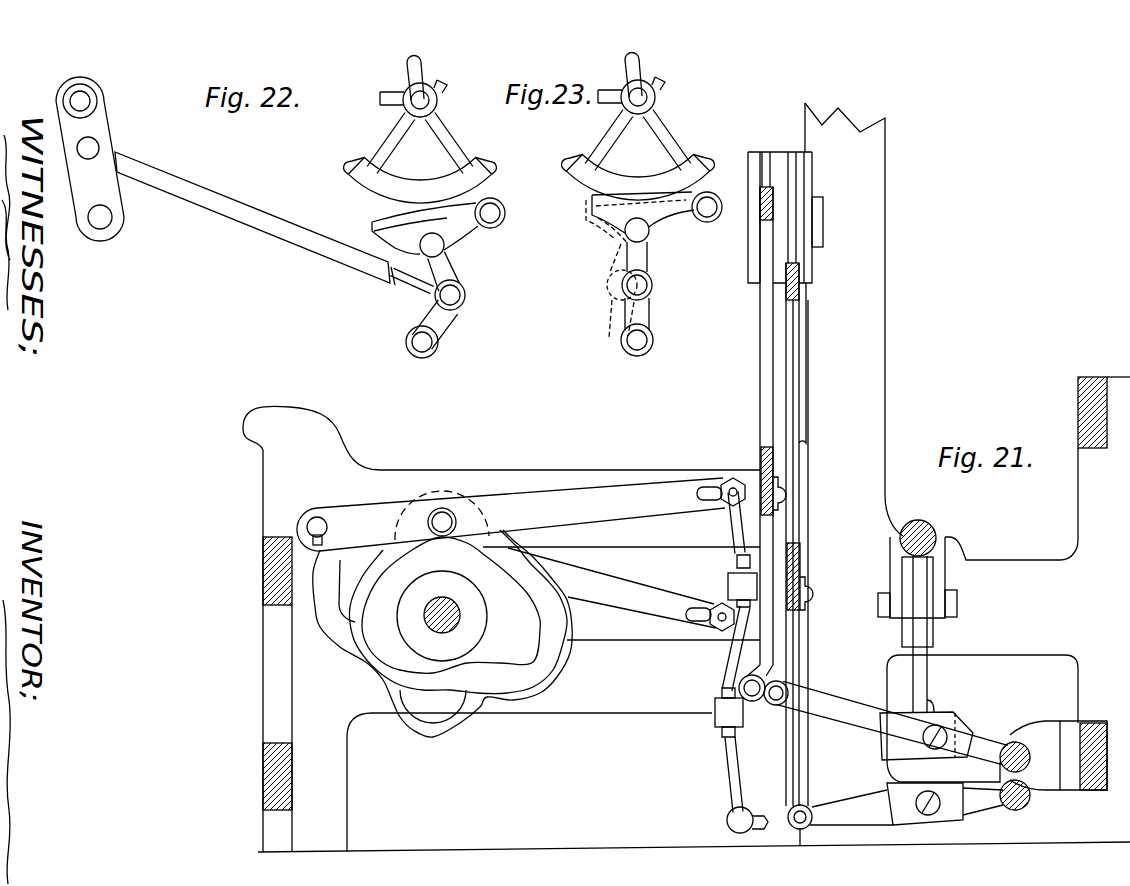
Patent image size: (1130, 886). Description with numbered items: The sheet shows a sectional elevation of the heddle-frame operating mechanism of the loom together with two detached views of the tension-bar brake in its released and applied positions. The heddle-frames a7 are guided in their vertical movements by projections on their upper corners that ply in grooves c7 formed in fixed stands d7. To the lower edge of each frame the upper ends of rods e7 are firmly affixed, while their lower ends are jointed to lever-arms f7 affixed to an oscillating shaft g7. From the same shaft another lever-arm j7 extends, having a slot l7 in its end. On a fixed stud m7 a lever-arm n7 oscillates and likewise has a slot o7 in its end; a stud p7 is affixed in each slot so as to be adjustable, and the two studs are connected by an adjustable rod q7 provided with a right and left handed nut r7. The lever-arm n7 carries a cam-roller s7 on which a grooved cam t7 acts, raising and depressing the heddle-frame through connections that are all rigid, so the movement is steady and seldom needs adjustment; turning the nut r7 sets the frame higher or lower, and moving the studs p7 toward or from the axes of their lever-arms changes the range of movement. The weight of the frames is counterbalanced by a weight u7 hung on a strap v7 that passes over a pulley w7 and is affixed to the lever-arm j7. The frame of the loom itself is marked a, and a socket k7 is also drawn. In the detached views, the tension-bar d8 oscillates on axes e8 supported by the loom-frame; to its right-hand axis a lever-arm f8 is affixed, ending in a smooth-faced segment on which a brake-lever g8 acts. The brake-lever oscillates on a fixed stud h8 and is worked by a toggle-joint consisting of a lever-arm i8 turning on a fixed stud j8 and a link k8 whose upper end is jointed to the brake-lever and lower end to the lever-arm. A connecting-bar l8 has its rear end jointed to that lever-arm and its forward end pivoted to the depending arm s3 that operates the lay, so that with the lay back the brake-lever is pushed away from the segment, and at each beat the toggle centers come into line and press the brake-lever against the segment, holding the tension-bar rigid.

In FIG. 22, the depending arm s3 is at (90, 159).
In FIG. 22, the connecting-bar l8 is at (230, 205).
In FIG. 22, the tension-bar d8 is at (417, 67).
In FIG. 23, the tension-bar d8 is at (632, 64).
In FIG. 22, the axes e8 is at (420, 100).
In FIG. 23, the axes e8 is at (638, 97).
In FIG. 22, the lever-arm f8 is at (420, 158).
In FIG. 23, the lever-arm f8 is at (638, 155).
In FIG. 22, the fixed stud h8 is at (490, 213).
In FIG. 23, the fixed stud h8 is at (709, 205).
In FIG. 22, the brake-lever g8 is at (427, 230).
In FIG. 23, the brake-lever g8 is at (640, 218).
In FIG. 22, the link k8 is at (446, 281).
In FIG. 23, the link k8 is at (639, 290).
In FIG. 22, the lever-arm i8 is at (434, 324).
In FIG. 23, the lever-arm i8 is at (637, 314).
In FIG. 22, the fixed stud j8 is at (420, 345).
In FIG. 23, the fixed stud j8 is at (632, 350).
In FIG. 21, the frame a is at (686, 477).
In FIG. 21, the heddle-frames a7 is at (775, 516).
In FIG. 21, the grooves c7 is at (792, 150).
In FIG. 21, the fixed stands d7 is at (776, 217).
In FIG. 21, the rods e7 is at (777, 522).
In FIG. 21, the fixed stud m7 is at (317, 520).
In FIG. 21, the lever-arm n7 is at (511, 553).
In FIG. 21, the slot o7 is at (706, 500).
In FIG. 21, the stud p7 is at (733, 477).
In FIG. 21, the adjustable rod q7 is at (730, 651).
In FIG. 21, the right and left handed nut r7 is at (736, 650).
In FIG. 21, the cam-roller s7 is at (443, 512).
In FIG. 21, the grooved cam t7 is at (442, 633).
In FIG. 21, the slot l7 is at (757, 818).
In FIG. 21, the lever-arm j7 is at (766, 823).
In FIG. 21, the lever-arms f7 is at (892, 753).
In FIG. 21, the weight u7 is at (919, 768).
In FIG. 21, the strap v7 is at (917, 616).
In FIG. 21, the pulley w7 is at (920, 617).
In FIG. 21, the oscillating shaft g7 is at (1015, 777).
In FIG. 21, the socket k7 is at (1058, 755).